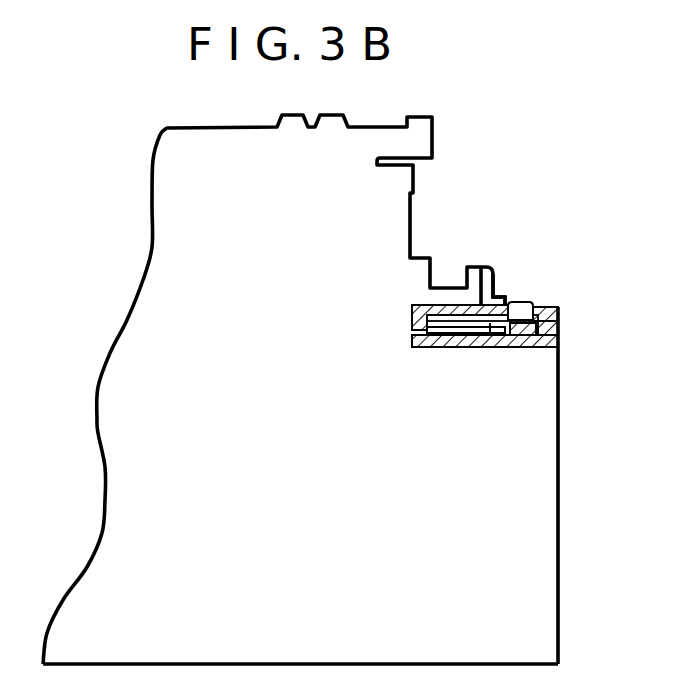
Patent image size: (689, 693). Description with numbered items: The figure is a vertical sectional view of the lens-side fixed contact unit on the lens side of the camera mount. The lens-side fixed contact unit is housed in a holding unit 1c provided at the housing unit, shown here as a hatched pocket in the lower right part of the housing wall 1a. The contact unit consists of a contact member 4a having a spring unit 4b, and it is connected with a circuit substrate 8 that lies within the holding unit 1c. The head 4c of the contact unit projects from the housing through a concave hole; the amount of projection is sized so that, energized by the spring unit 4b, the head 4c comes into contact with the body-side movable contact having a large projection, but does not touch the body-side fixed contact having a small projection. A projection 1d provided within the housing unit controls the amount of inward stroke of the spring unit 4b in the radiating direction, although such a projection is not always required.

The body wall portion 1a is at (481, 305).
The holding unit 1c is at (487, 345).
The projection 1d is at (557, 333).
The contact member 4a is at (523, 303).
The spring unit 4b is at (448, 318).
The head 4c is at (515, 303).
The circuit substrate 8 is at (490, 336).